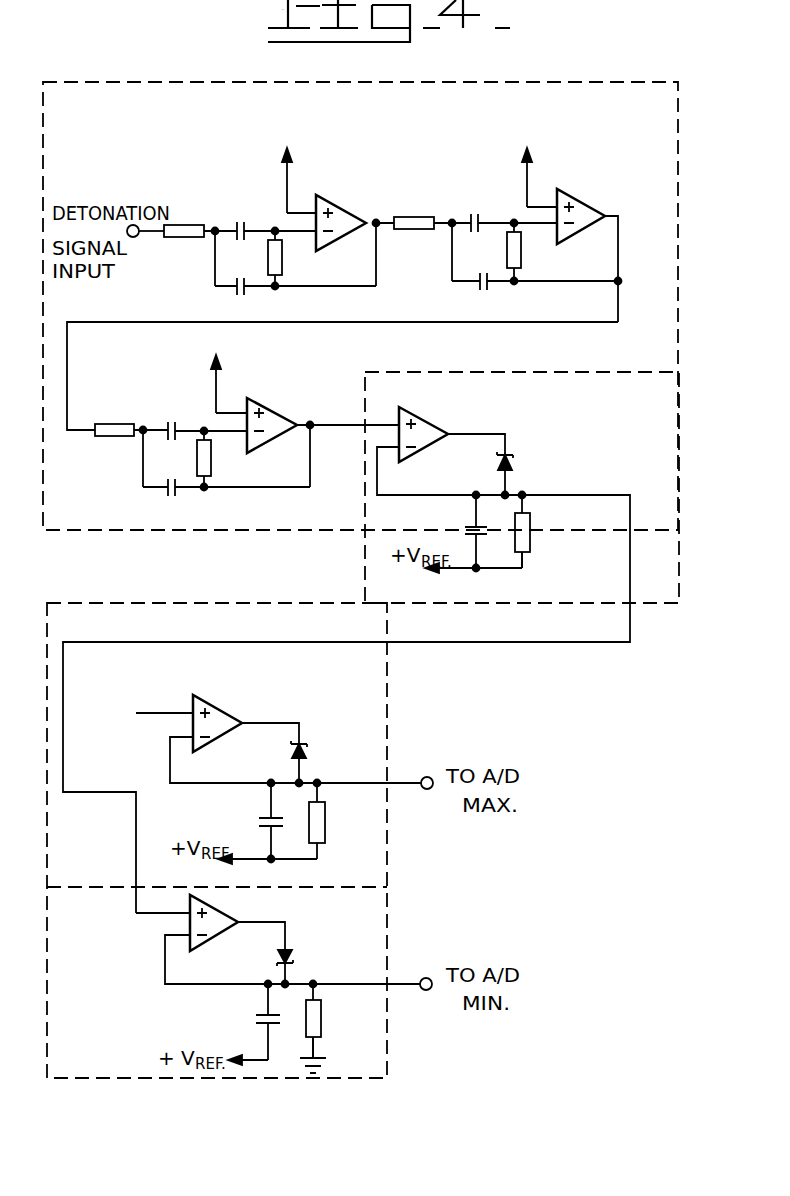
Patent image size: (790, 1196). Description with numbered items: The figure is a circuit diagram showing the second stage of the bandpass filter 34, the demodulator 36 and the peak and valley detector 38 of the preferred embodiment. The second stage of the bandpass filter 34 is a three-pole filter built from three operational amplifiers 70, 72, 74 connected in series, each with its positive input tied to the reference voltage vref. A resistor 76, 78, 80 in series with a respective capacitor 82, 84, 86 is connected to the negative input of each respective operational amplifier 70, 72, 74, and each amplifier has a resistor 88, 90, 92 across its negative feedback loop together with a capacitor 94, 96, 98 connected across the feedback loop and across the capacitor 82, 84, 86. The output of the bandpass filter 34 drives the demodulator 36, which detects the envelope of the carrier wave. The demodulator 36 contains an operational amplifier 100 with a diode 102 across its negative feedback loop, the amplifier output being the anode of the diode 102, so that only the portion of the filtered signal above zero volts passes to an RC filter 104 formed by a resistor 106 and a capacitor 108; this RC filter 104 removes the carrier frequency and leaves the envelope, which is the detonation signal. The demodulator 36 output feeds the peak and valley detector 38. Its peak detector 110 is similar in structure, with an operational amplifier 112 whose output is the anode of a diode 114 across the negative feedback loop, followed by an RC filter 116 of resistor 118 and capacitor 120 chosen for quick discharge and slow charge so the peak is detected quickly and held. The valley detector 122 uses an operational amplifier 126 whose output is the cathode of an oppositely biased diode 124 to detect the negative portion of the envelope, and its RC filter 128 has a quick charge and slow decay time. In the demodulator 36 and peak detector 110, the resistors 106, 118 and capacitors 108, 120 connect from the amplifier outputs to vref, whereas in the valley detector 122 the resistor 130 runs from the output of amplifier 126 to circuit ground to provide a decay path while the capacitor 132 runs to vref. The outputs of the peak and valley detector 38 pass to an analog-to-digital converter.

The bandpass filter 34 is at (630, 82).
The demodulator 36 is at (680, 413).
The peak and valley detector 38 is at (388, 708).
The RC filter 116 is at (217, 874).
The operational amplifier 70 is at (340, 212).
The operational amplifier 72 is at (588, 205).
The operational amplifier 74 is at (270, 410).
The resistor 76 is at (186, 224).
The resistor 78 is at (402, 217).
The resistor 80 is at (117, 425).
The capacitor 82 is at (244, 222).
The capacitor 84 is at (478, 218).
The capacitor 86 is at (172, 422).
The resistor 88 is at (282, 260).
The resistor 90 is at (521, 254).
The resistor 92 is at (211, 458).
The capacitor 94 is at (246, 296).
The capacitor 96 is at (489, 293).
The capacitor 98 is at (176, 496).
The operational amplifier 100 is at (420, 412).
The diode 102 is at (511, 460).
The RC filter 104 is at (540, 566).
The resistor 106 is at (531, 530).
The capacitor 108 is at (466, 527).
The peak detector 110 is at (230, 694).
The operational amplifier 112 is at (216, 738).
The diode 114 is at (305, 746).
The resistor 118 is at (344, 821).
The capacitor 120 is at (245, 812).
The valley detector 122 is at (303, 925).
The diode 124 is at (290, 963).
The operational amplifier 126 is at (216, 936).
The RC filter 128 is at (348, 1049).
The resistor 130 is at (323, 1012).
The capacitor 132 is at (259, 1015).